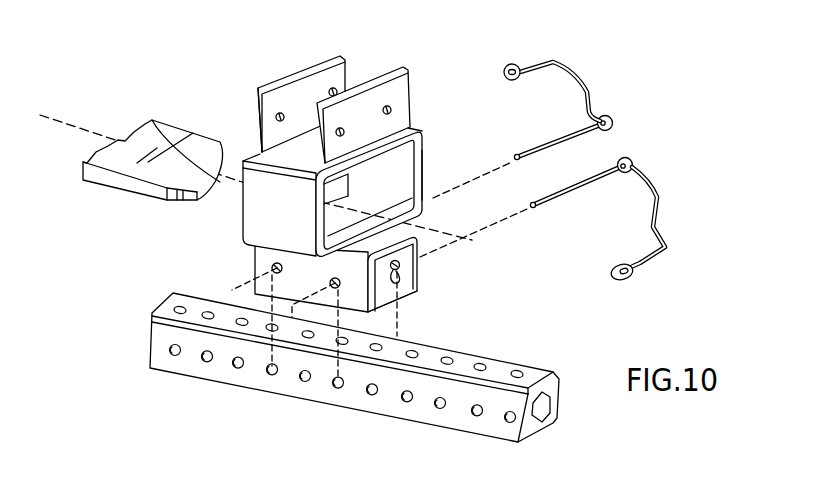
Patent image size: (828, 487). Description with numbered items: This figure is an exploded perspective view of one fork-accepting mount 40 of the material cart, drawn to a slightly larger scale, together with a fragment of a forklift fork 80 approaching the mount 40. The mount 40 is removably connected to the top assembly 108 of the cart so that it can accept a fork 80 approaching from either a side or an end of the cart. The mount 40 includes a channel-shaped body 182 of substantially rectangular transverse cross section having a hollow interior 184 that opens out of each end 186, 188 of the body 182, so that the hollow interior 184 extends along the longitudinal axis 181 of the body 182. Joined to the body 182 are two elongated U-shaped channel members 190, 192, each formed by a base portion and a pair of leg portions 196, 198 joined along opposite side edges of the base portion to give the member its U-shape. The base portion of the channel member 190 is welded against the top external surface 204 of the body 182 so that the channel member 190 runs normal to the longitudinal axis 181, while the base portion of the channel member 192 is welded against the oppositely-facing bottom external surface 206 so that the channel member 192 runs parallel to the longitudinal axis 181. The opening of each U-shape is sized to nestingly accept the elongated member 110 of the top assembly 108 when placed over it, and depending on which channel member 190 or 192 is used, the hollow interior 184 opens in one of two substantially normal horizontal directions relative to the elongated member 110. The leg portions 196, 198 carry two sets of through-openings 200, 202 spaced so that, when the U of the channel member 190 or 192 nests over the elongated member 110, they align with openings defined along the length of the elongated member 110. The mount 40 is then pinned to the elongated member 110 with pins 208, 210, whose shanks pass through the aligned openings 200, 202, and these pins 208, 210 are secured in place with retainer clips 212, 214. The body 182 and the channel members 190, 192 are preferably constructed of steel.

The fork-accepting mount 40 is at (243, 218).
The fork 80 is at (118, 192).
The top assembly 108 is at (147, 304).
The elongated member 110 is at (497, 360).
The longitudinal axis 181 is at (290, 180).
The channel-shaped body 182 is at (423, 162).
The hollow interior 184 is at (410, 178).
The end of the body 186 is at (153, 120).
The end of the body 188 is at (428, 172).
The U-shaped channel member 190 is at (258, 116).
The U-shaped channel member 192 is at (255, 252).
The leg portion 196 is at (258, 96).
The leg portion 198 is at (402, 69).
The through-openings 200 is at (272, 267).
The through-openings 202 is at (400, 286).
The external surface 204 is at (410, 126).
The external surface 206 is at (432, 220).
The pin 208 is at (543, 147).
The pin 210 is at (602, 181).
The retainer clip 212 is at (533, 62).
The retainer clip 214 is at (648, 262).